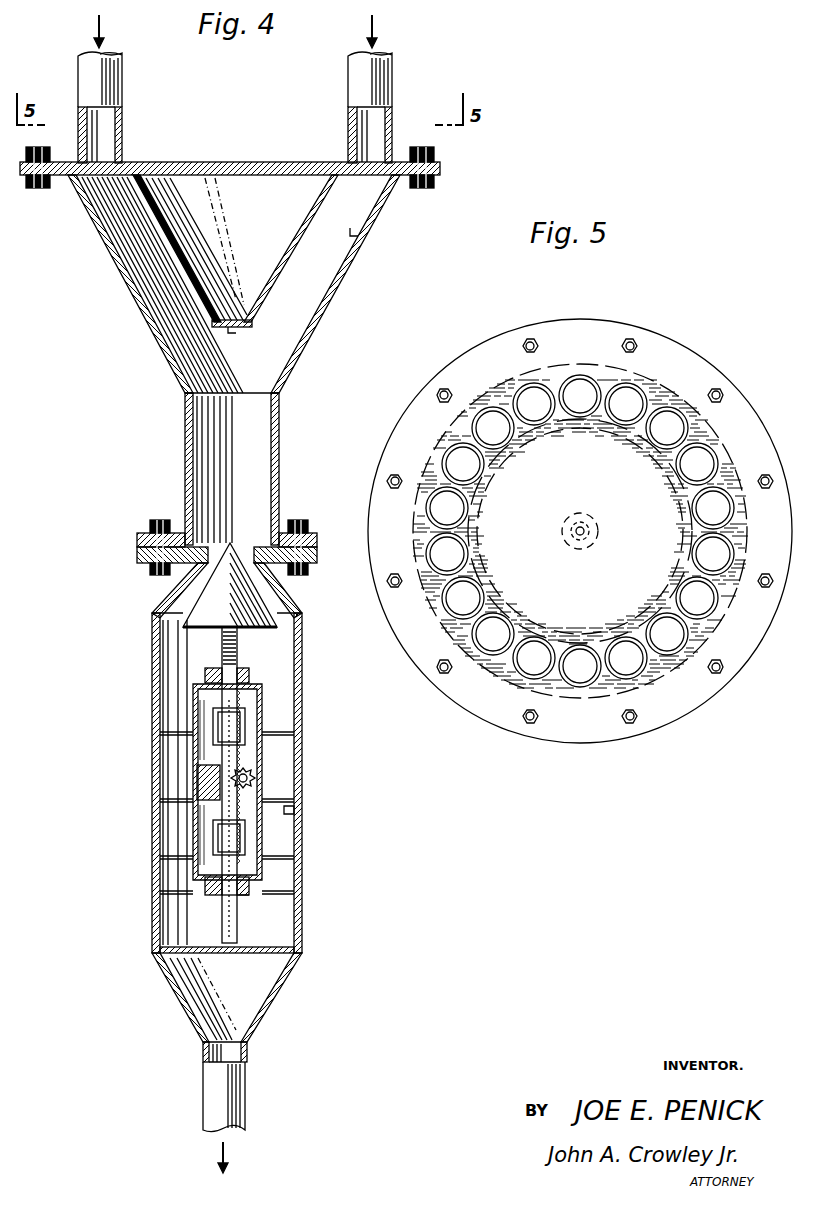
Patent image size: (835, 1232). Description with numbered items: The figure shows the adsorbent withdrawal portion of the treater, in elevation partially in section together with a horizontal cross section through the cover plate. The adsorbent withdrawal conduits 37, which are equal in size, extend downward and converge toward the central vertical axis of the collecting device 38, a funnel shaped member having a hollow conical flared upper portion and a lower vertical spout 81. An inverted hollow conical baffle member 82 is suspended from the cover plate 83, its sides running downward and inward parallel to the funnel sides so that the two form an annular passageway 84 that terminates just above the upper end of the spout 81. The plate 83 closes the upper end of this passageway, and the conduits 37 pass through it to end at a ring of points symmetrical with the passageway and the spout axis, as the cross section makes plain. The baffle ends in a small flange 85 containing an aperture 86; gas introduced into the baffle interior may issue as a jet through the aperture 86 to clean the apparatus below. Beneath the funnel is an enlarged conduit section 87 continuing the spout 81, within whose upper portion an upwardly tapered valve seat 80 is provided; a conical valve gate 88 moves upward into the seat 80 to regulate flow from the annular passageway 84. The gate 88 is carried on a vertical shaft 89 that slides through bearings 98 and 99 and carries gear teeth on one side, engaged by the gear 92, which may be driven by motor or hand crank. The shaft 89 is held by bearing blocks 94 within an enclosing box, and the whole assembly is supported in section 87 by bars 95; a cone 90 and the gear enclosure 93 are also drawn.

In FIG. 4, the adsorbent withdrawal conduits 37 is at (80, 64).
In FIG. 5, the adsorbent withdrawal conduits 37 is at (583, 372).
In FIG. 4, the collecting device 38 is at (110, 252).
In FIG. 4, the valve seat 80 is at (285, 606).
In FIG. 4, the spout portion 81 is at (280, 450).
In FIG. 4, the conical baffle member 82 is at (285, 265).
In FIG. 5, the conical baffle member 82 is at (667, 497).
In FIG. 4, the cover plate 83 is at (262, 155).
In FIG. 5, the cover plate 83 is at (655, 347).
In FIG. 4, the annular passageway 84 is at (358, 233).
In FIG. 5, the annular passageway 84 is at (705, 420).
In FIG. 4, the flange 85 is at (252, 325).
In FIG. 5, the flange 85 is at (580, 545).
In FIG. 4, the aperture 86 is at (236, 330).
In FIG. 5, the aperture 86 is at (585, 540).
In FIG. 4, the enlarged conduit section 87 is at (203, 272).
In FIG. 4, the valve gate 88 is at (202, 593).
In FIG. 4, the vertical shaft 89 is at (245, 660).
In FIG. 4, the cone deflector 90 is at (258, 590).
In FIG. 4, the gear 92 is at (258, 775).
In FIG. 4, the gear box 93 is at (265, 700).
In FIG. 4, the bearing blocks 94 is at (205, 775).
In FIG. 4, the bars 95 is at (283, 728).
In FIG. 4, the bearing 98 is at (249, 675).
In FIG. 4, the bearing 99 is at (240, 895).